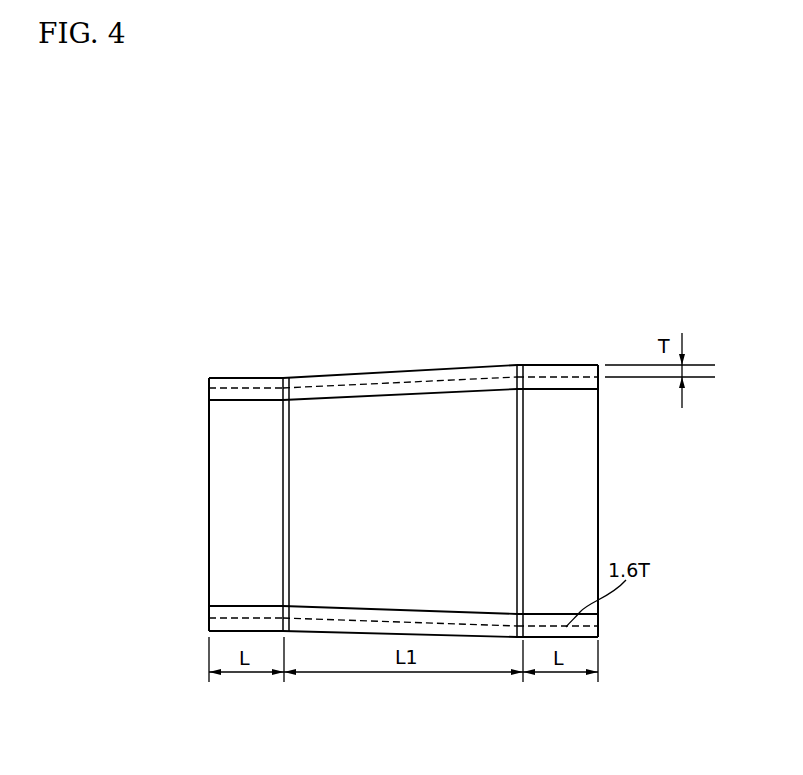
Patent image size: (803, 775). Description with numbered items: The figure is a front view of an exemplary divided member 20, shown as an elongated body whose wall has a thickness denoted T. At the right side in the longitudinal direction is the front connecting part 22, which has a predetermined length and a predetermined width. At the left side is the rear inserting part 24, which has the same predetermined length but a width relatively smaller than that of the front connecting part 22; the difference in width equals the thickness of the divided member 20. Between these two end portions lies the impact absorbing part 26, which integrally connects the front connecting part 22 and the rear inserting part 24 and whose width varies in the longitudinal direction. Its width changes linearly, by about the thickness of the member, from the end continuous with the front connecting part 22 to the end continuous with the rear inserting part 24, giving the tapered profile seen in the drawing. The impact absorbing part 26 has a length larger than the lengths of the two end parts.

The divided member 20 is at (417, 443).
The front connecting part 22 is at (581, 501).
The rear inserting part 24 is at (257, 490).
The impact absorbing part 26 is at (398, 435).